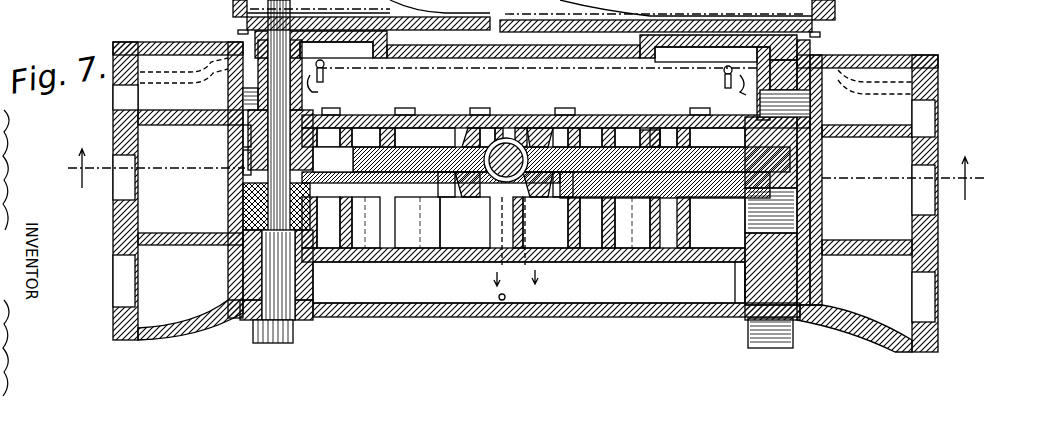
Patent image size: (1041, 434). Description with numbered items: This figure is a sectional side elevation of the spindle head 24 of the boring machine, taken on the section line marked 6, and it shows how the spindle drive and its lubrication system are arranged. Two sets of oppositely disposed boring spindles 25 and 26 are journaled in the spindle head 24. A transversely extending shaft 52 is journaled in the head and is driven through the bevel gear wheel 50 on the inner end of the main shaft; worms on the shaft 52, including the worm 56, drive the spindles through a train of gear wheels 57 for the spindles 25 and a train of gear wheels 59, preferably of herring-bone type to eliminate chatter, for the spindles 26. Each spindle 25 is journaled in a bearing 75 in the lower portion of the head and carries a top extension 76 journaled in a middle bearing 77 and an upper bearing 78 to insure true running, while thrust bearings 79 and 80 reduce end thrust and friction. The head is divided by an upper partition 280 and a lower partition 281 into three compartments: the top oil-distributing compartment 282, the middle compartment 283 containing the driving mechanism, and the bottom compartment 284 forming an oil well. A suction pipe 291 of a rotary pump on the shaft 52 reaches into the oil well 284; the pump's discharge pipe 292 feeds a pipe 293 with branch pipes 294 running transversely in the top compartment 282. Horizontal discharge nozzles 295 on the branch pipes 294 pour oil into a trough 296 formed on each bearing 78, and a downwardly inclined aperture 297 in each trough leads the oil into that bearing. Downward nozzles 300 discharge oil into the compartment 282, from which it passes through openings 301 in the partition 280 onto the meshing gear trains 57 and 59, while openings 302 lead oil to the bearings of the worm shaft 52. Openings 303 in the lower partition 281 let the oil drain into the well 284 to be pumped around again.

The section line 6- 6 is at (521, 174).
The spindle head 24 is at (115, 43).
The spindles 25 is at (296, 338).
The spindles 26 is at (793, 346).
The bevel gear wheel 50 is at (466, 196).
The shaft 52 is at (498, 3).
The worm 56 is at (524, 124).
The train of gear wheels 57 is at (546, 172).
The train of gear wheels 59 is at (653, 151).
The bearing 75 is at (243, 278).
The top extension 76 is at (243, 140).
The bearing 77 is at (243, 162).
The bearing 78 is at (252, 44).
The thrust bearing 79 is at (243, 218).
The thrust bearing 80 is at (243, 99).
The upper partition 280 is at (390, 107).
The lower partition 281 is at (383, 256).
The compartment 282 is at (440, 80).
The compartment 283 is at (447, 256).
The compartment 284 is at (548, 318).
The suction pipe 291 is at (499, 291).
The discharge pipe 292 is at (508, 79).
The pipe 293 is at (615, 70).
The branch pipes 294 is at (725, 75).
The discharge nozzles 295 is at (528, 54).
The trough 296 is at (313, 77).
The aperture 297 is at (232, 73).
The discharge nozzles 300 is at (324, 76).
The openings 301 is at (318, 115).
The openings 302 is at (502, 115).
The openings 303 is at (453, 259).